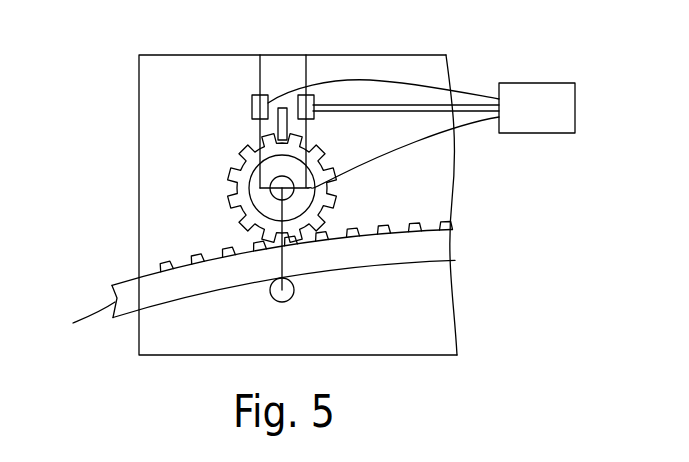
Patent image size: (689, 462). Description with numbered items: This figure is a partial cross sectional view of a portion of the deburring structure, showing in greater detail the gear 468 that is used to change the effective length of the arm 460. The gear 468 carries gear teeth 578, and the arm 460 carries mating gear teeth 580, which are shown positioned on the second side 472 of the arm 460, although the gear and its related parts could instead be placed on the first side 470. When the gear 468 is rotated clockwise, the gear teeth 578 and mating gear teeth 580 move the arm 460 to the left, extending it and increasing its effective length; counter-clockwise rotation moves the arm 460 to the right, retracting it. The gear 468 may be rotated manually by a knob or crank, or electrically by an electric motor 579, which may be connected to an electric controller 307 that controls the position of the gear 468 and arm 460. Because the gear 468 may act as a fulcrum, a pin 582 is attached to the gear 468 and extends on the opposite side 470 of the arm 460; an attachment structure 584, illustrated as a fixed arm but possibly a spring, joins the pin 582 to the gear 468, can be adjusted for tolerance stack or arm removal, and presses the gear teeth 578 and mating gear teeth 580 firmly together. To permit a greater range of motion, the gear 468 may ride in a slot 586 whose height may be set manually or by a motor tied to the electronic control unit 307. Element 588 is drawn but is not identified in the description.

The electric controller 307 is at (548, 80).
The arm 460 is at (70, 320).
The gear 468 is at (328, 162).
The first side 470 is at (183, 300).
The second side 472 is at (132, 280).
The gear teeth 578 is at (238, 215).
The electric motor 579 is at (314, 106).
The mating gear teeth 580 is at (223, 250).
The pin 582 is at (292, 298).
The attachment structure 584 is at (283, 257).
The slot 586 is at (278, 132).
The sensor 588 is at (258, 96).